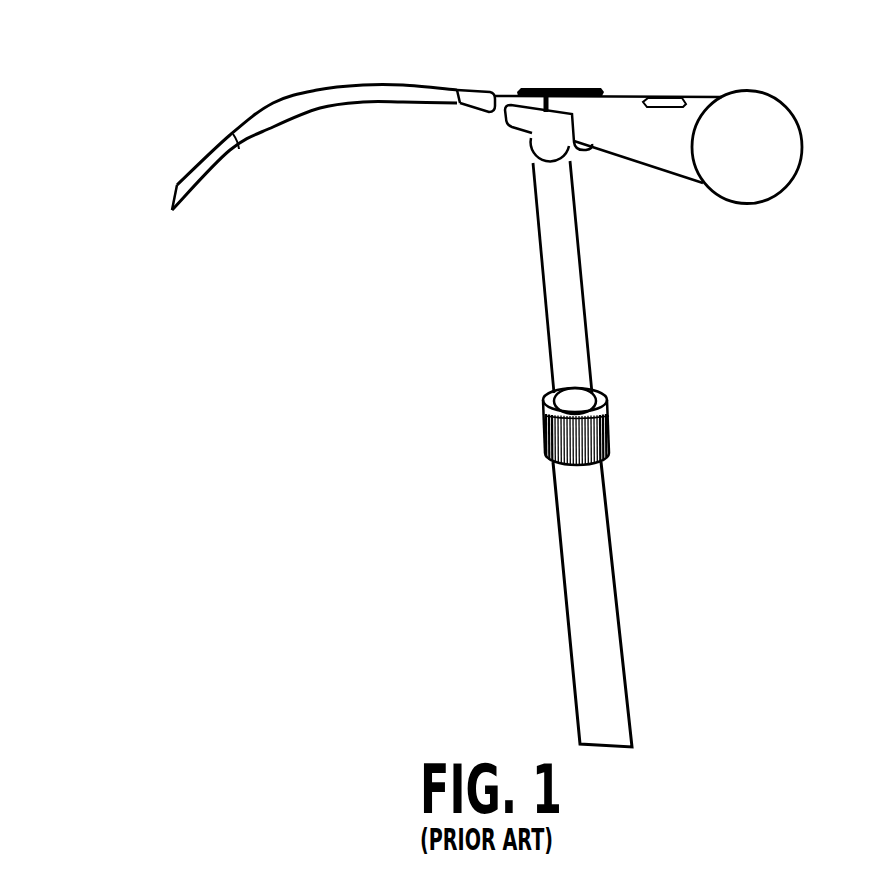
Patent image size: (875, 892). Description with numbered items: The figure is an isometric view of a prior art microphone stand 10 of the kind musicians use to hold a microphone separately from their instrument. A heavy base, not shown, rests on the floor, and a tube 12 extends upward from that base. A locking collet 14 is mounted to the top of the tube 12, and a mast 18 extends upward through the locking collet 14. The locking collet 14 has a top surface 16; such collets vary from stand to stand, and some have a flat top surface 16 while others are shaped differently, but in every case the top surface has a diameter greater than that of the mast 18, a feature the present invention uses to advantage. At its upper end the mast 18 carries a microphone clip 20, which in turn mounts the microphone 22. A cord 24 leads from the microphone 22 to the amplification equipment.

The microphone stand 10 is at (480, 268).
The tube 12 is at (597, 577).
The locking collet 14 is at (610, 430).
The top surface 16 is at (603, 390).
The mast 18 is at (570, 302).
The microphone clip 20 is at (523, 125).
The microphone 22 is at (637, 107).
The cord 24 is at (213, 152).